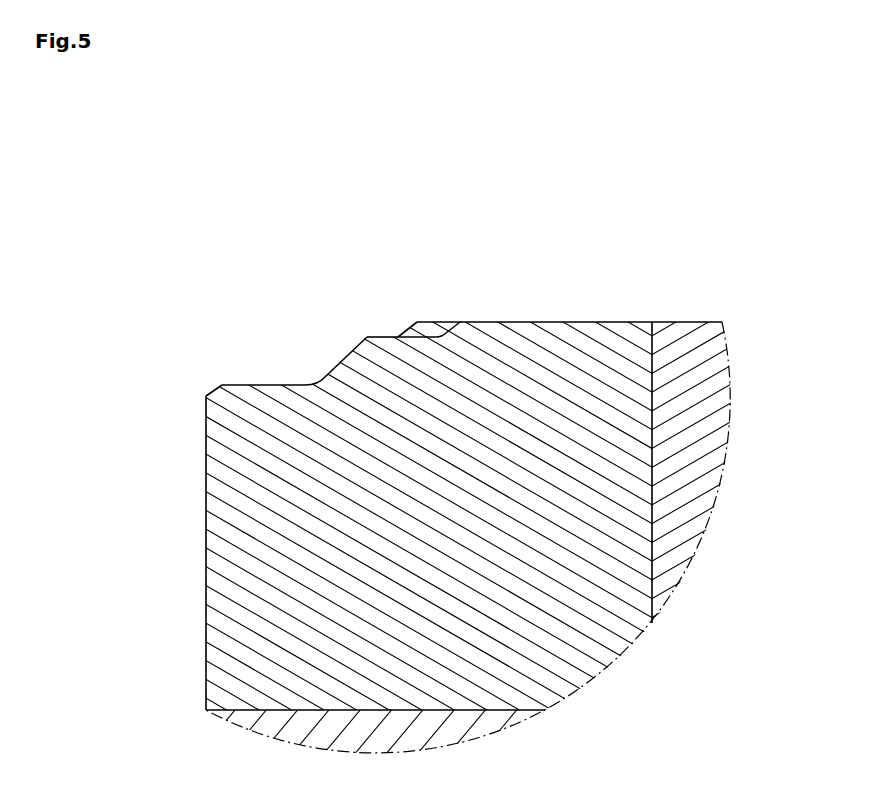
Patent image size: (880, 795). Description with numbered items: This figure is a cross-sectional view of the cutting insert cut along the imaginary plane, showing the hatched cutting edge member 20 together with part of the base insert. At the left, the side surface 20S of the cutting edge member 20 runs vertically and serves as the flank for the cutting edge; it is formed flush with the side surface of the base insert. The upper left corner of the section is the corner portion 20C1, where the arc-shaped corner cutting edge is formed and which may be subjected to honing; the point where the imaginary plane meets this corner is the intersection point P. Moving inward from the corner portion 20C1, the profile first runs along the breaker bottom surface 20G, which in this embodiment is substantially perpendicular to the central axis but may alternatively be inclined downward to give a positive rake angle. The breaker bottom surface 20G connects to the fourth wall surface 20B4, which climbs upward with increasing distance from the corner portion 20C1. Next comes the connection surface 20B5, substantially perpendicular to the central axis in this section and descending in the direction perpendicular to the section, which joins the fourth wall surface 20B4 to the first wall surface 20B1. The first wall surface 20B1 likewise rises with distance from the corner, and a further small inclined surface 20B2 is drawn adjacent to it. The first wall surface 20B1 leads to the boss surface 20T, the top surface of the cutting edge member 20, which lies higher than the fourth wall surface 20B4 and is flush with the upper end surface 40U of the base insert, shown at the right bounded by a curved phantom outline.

The cutting edge member 20 is at (428, 397).
The side surface 20S is at (205, 493).
The corner portion 20C1 is at (154, 384).
The intersection point P is at (205, 397).
The breaker bottom surface 20G is at (242, 383).
The fourth wall surface 20B4 is at (340, 357).
The connection surface 20B5 is at (382, 335).
The inclined surface 20B2 is at (402, 329).
The first wall surface 20B1 is at (440, 324).
The boss surface 20T is at (527, 320).
The upper end surface of base insert 40U is at (689, 320).